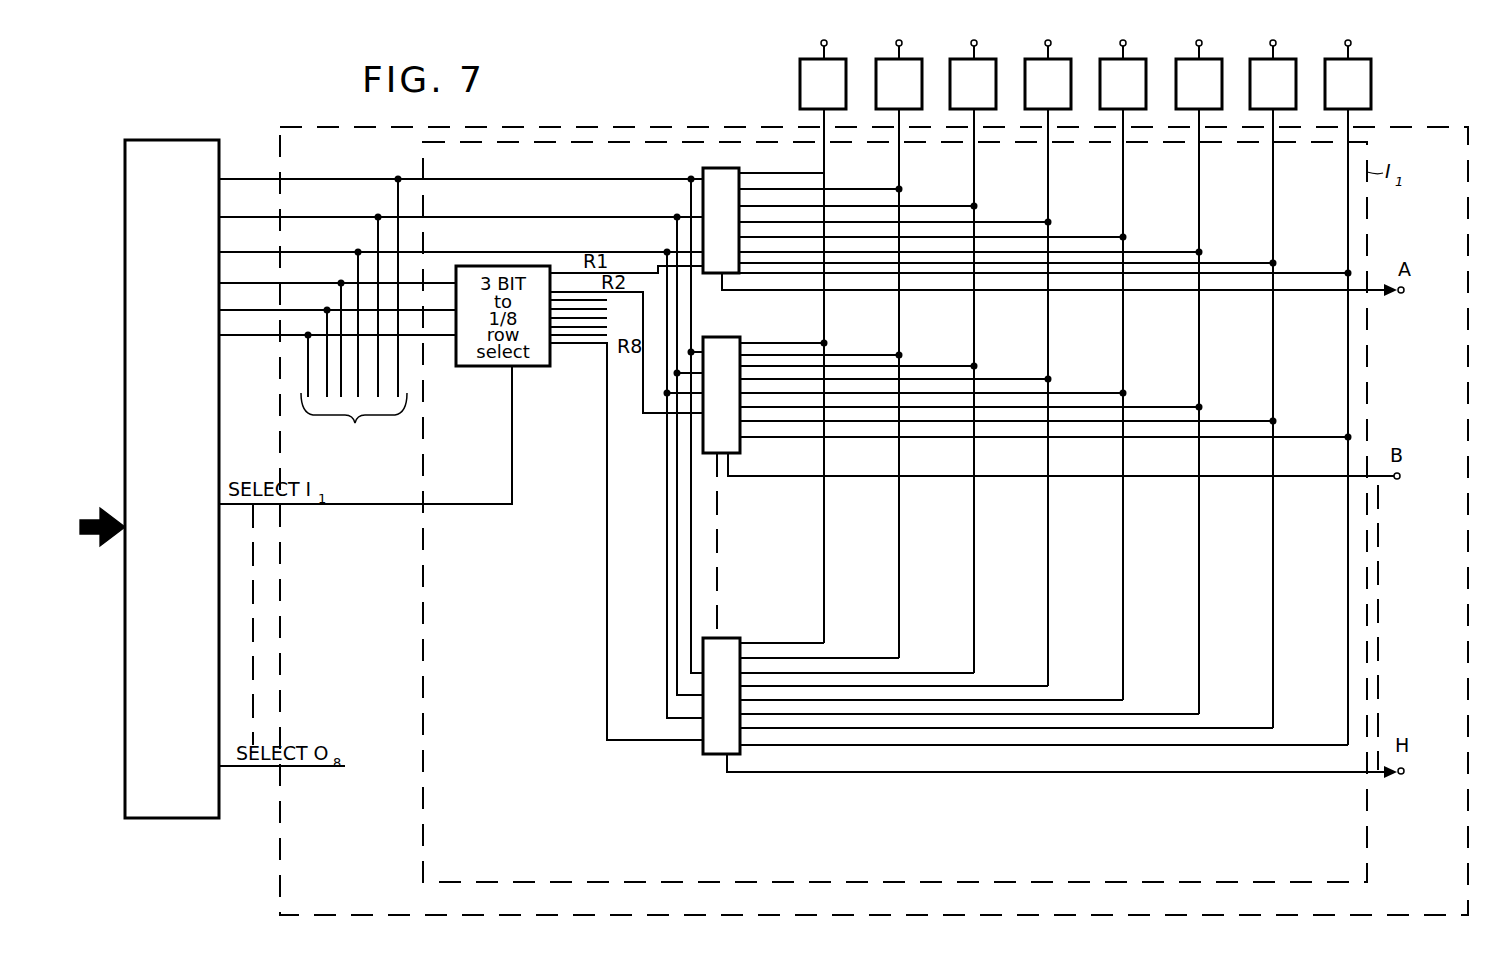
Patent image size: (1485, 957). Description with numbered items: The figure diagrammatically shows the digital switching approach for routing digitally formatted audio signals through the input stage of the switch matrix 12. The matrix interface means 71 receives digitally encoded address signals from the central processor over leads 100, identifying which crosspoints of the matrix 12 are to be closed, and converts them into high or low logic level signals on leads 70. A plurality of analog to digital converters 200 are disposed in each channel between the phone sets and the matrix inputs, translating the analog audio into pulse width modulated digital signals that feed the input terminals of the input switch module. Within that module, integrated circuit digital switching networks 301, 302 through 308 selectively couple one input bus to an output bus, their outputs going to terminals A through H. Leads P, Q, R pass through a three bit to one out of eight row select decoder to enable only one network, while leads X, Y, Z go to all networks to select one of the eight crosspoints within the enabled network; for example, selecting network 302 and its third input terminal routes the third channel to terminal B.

The switch matrix 12 is at (284, 128).
The leads 70 is at (236, 160).
The matrix interface means 71 is at (142, 140).
The leads 100 is at (95, 520).
The analog to digital converters 200 is at (800, 84).
The integrated circuit digital switching network 301 is at (714, 176).
The integrated circuit digital switching network 302 is at (713, 338).
The integrated circuit digital switching network 308 is at (720, 636).